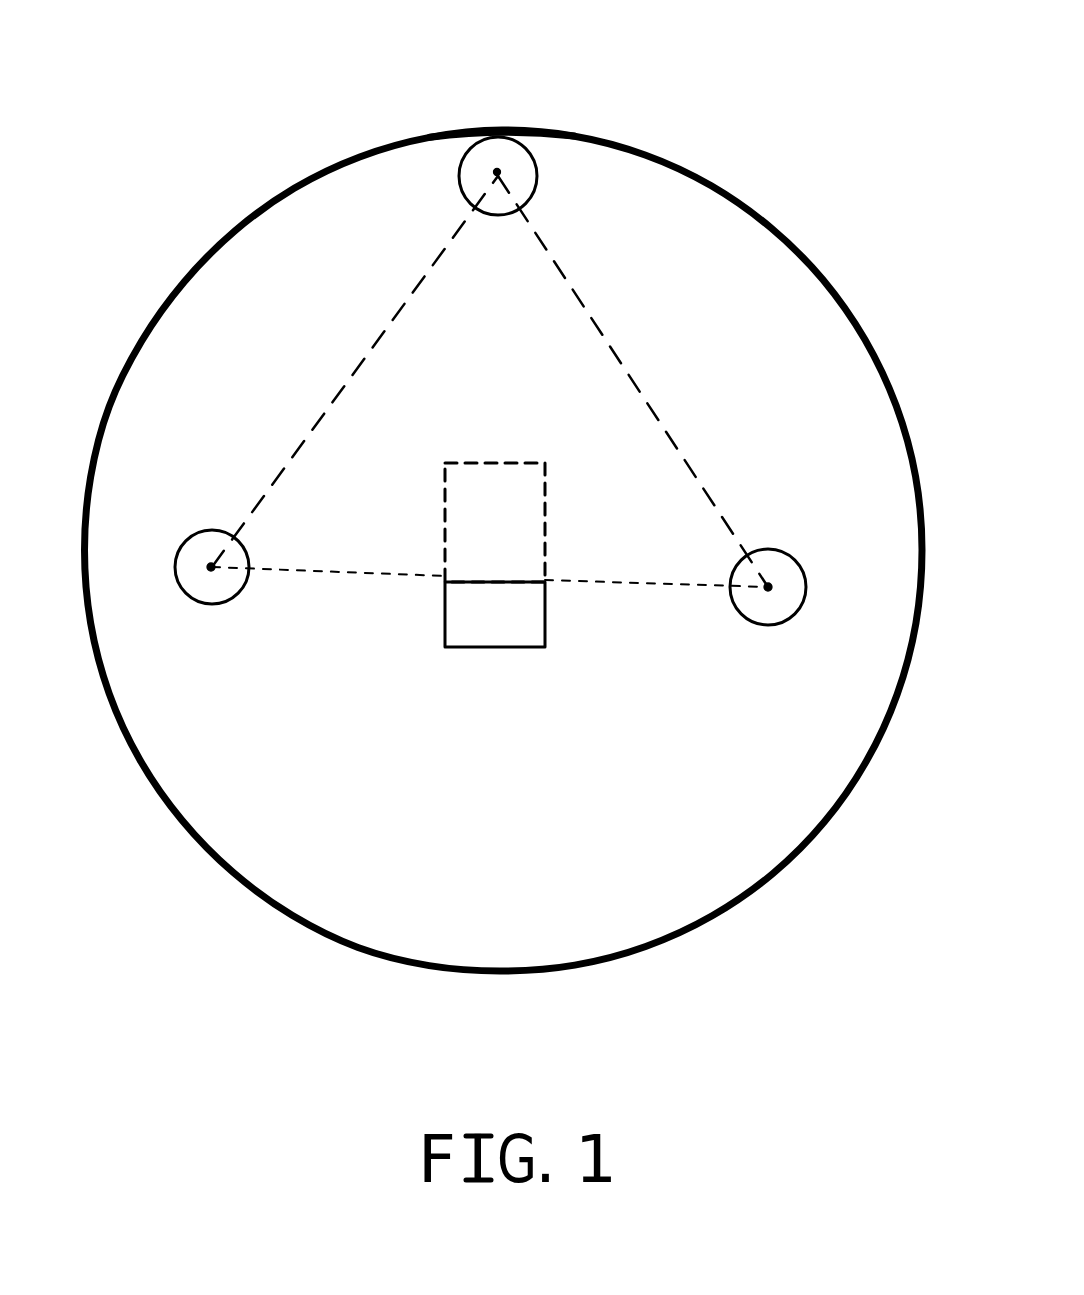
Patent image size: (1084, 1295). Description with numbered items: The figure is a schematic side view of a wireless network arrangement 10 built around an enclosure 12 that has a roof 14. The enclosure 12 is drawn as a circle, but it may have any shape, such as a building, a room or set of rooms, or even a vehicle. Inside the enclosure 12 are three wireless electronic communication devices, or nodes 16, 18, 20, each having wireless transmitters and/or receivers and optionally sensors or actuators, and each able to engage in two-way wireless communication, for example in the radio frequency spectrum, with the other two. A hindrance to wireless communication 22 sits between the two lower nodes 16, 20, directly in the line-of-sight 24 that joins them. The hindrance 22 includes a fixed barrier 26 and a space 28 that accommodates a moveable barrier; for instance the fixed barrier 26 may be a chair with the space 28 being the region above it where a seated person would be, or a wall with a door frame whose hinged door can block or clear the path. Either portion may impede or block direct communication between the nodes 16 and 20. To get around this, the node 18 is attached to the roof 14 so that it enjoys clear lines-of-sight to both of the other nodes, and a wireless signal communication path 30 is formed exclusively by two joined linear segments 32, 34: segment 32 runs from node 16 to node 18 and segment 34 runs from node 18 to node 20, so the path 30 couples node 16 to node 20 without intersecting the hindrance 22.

The wireless network arrangement 10 is at (210, 980).
The enclosure 12 is at (762, 216).
The roof 14 is at (466, 131).
The node 16 is at (214, 604).
The node 18 is at (460, 173).
The node 20 is at (773, 625).
The hindrance to wireless communication 22 is at (490, 637).
The line-of-sight 24 is at (337, 573).
The fixed barrier 26 is at (495, 614).
The space 28 is at (522, 546).
The wireless signal communication path 30 is at (480, 381).
The linear segment 32 is at (383, 330).
The linear segment 34 is at (578, 292).